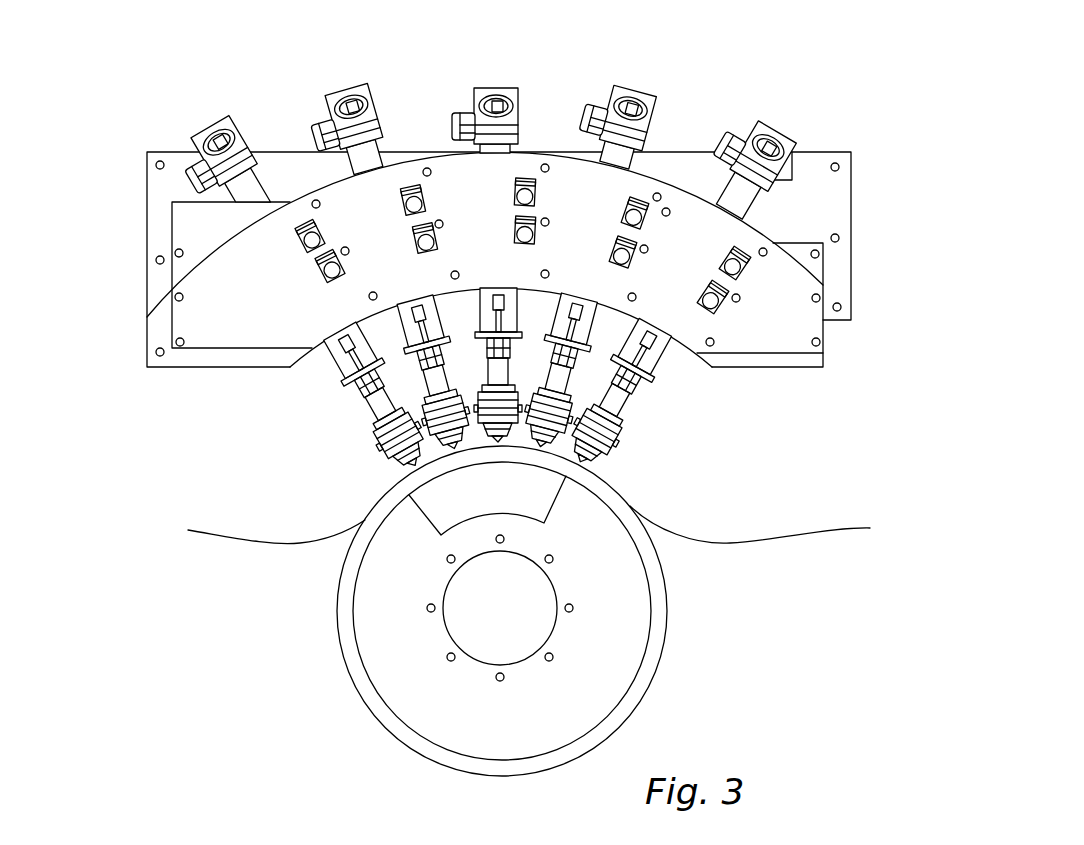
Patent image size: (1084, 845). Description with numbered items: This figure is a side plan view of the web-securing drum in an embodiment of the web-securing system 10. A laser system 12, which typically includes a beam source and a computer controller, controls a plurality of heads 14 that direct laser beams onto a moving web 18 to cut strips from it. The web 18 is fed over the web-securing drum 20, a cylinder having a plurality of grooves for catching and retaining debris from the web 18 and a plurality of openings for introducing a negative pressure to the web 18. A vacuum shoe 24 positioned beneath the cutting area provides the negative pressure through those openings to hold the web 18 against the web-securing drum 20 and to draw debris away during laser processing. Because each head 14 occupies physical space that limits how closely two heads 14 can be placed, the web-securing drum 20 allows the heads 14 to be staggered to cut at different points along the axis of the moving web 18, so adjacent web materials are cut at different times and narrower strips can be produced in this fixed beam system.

The web-securing system 10 is at (498, 245).
The laser system 12 is at (208, 384).
The heads 14 is at (366, 441).
The web 18 is at (227, 531).
The web-securing drum 20 is at (668, 668).
The vacuum shoe 24 is at (540, 506).